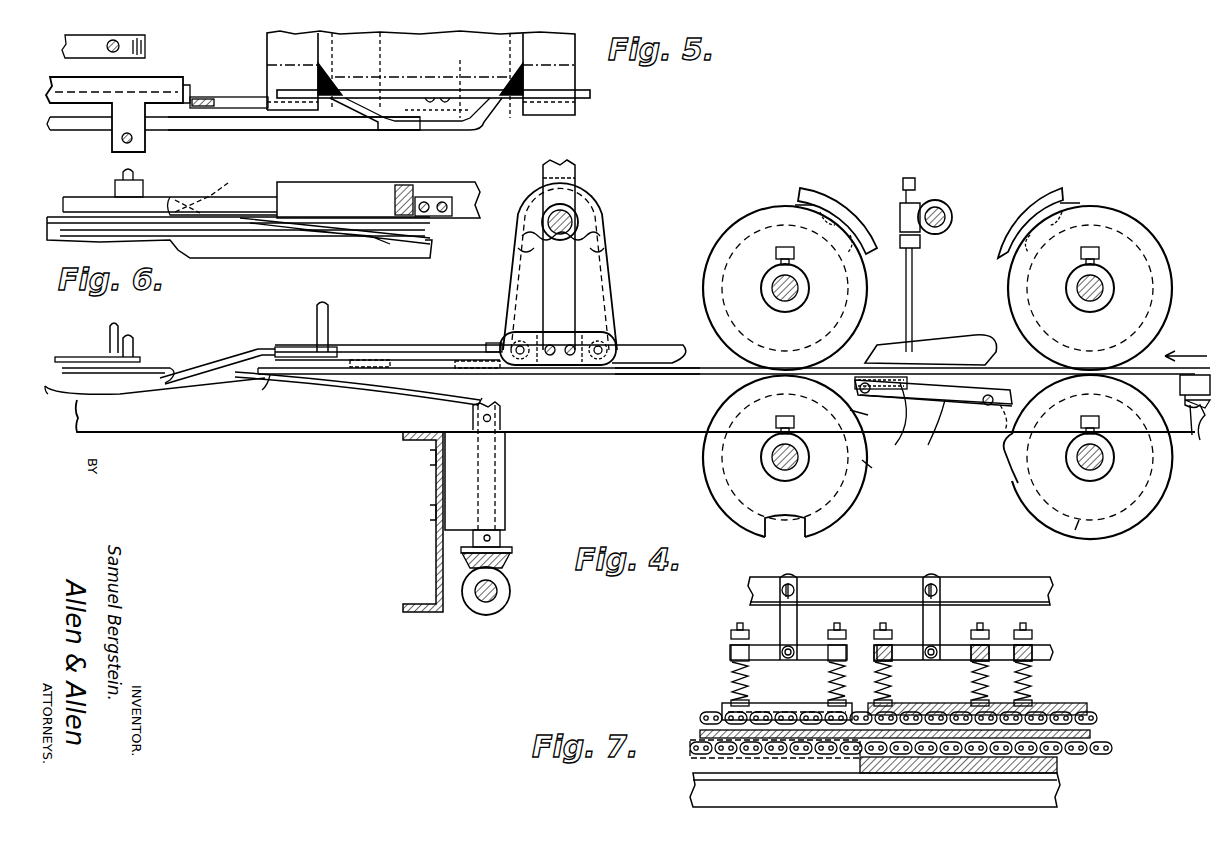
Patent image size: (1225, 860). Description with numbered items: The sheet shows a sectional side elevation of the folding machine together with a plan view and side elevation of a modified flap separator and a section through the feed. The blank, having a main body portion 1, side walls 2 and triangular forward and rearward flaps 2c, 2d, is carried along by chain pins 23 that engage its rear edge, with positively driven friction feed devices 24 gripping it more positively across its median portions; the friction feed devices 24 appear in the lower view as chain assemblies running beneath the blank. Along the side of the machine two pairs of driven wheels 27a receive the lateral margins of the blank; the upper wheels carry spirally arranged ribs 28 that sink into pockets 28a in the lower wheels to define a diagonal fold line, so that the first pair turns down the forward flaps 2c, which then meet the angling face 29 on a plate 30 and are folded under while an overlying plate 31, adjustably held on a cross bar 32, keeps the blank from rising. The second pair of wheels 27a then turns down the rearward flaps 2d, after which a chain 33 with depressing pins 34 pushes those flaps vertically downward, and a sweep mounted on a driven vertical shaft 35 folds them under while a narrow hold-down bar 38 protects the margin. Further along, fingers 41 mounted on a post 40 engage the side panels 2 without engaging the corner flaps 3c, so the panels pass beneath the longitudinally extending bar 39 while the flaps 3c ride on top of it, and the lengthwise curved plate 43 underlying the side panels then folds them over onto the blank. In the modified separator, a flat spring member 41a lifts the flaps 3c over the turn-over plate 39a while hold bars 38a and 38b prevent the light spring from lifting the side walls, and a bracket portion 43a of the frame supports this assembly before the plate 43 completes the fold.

In FIG. 4, the main body portion 1 is at (985, 372).
In FIG. 5, the side walls 2 is at (430, 125).
In FIG. 4, the side walls 2 is at (405, 380).
In FIG. 4, the forward triangular flaps 2c is at (372, 368).
In FIG. 4, the rearward triangular flaps 2d is at (478, 368).
In FIG. 5, the corner flaps 3c is at (270, 70).
In FIG. 4, the corner flaps 3c is at (265, 378).
In FIG. 4, the pins 23 is at (904, 424).
In FIG. 7, the friction feed devices 24 is at (1093, 708).
In FIG. 4, the driven rolls or wheels 27a is at (745, 230).
In FIG. 4, the ribs 28 is at (825, 195).
In FIG. 4, the pockets 28a is at (790, 540).
In FIG. 4, the angling face 29 is at (995, 412).
In FIG. 4, the plates 30 is at (941, 433).
In FIG. 4, the overlying plates 31 is at (930, 340).
In FIG. 4, the cross bar 32 is at (940, 208).
In FIG. 4, the chains 33 is at (608, 262).
In FIG. 4, the depressing pins 34 is at (490, 343).
In FIG. 4, the driven vertical shaft 35 is at (497, 492).
In FIG. 4, the hold-down bars 38 is at (415, 345).
In FIG. 5, the hold bar 38a is at (383, 90).
In FIG. 5, the hold bar 38b is at (283, 125).
In FIG. 4, the longitudinally extending bars 39 is at (140, 360).
In FIG. 5, the turn-over plate or bar 39a is at (170, 77).
In FIG. 6, the turn-over plate or bar 39a is at (150, 198).
In FIG. 4, the post 40 is at (328, 305).
In FIG. 4, the fingers 41 is at (215, 352).
In FIG. 5, the flat spring member 41a is at (200, 97).
In FIG. 6, the flat spring member 41a is at (228, 183).
In FIG. 6, the plates 43 is at (185, 240).
In FIG. 4, the plates 43 is at (58, 393).
In FIG. 5, the frame bracket 43a is at (77, 125).